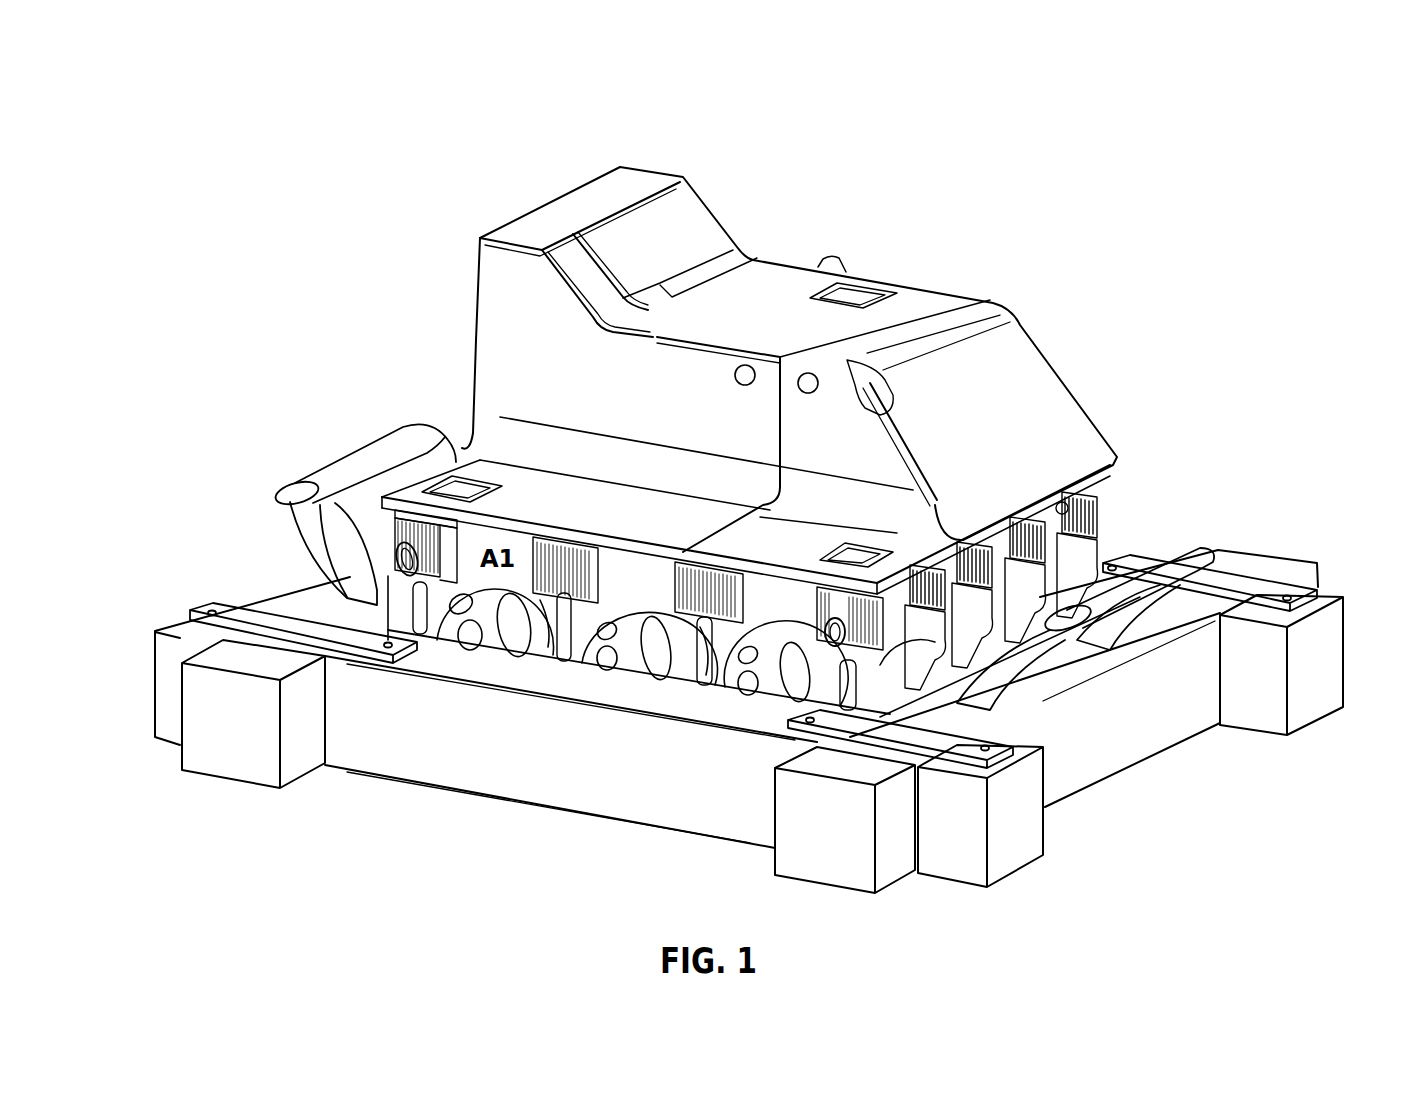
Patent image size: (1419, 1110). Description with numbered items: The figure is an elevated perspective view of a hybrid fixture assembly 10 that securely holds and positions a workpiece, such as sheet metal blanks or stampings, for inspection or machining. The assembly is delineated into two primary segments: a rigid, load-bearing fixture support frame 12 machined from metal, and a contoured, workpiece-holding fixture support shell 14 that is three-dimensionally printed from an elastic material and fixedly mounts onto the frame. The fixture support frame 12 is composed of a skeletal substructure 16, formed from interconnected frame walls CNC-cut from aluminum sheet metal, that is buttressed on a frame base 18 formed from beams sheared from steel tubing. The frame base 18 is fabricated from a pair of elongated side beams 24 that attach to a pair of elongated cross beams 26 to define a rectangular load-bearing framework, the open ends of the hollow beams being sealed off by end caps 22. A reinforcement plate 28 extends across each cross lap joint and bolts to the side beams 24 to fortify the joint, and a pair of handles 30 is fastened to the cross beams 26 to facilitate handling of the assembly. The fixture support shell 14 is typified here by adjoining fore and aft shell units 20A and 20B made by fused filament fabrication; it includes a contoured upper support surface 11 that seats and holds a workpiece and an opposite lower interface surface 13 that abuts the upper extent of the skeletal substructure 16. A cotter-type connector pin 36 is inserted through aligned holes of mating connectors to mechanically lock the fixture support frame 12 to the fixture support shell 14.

The hybrid fixture assembly 10 is at (247, 125).
The upper support surface 11 is at (573, 207).
The fixture support frame 12 is at (1287, 842).
The lower interface surface 13 is at (631, 572).
The fixture support shell 14 is at (1013, 145).
The skeletal substructure 16 is at (538, 668).
The frame base 18 is at (502, 838).
The fore shell unit 20A is at (997, 290).
The aft shell unit 20B is at (848, 252).
The end cap 22 is at (242, 768).
The side beam 24 is at (958, 858).
The cross beam 26 is at (305, 760).
The reinforcement plate 28 is at (233, 620).
The handle 30 is at (347, 470).
The connector pin 36 is at (396, 553).